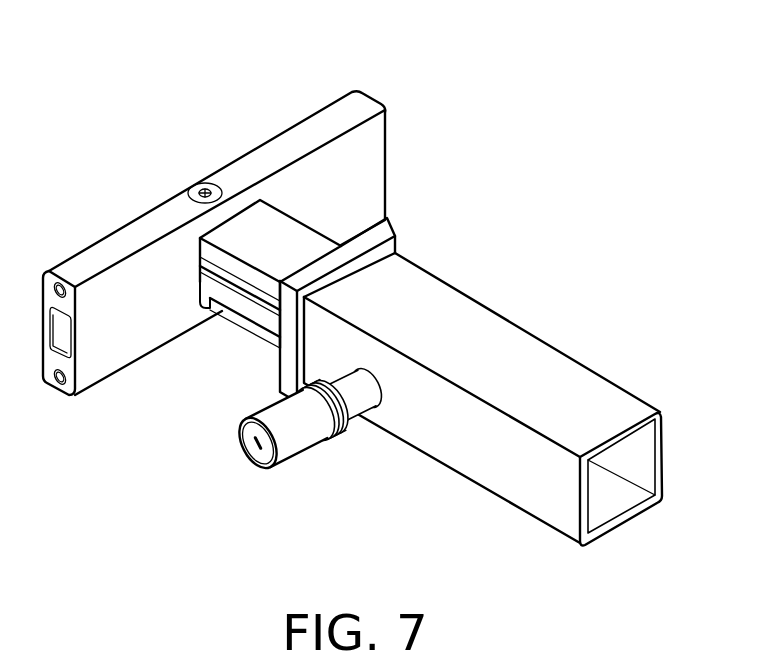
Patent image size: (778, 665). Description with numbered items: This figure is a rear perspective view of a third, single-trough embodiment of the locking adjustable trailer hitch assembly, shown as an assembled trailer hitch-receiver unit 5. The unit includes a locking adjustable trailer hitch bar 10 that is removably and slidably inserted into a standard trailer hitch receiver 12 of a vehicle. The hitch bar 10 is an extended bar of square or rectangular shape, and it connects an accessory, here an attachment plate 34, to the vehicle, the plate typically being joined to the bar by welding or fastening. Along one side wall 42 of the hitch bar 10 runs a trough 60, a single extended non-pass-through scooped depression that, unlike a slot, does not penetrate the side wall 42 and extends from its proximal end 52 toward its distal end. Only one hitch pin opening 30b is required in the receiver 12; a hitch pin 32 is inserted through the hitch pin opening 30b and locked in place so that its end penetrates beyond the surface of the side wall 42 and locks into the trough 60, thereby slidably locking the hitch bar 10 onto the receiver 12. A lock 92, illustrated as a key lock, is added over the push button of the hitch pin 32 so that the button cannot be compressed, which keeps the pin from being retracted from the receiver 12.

The trailer hitch-receiver unit 5 is at (288, 98).
The locking adjustable trailer hitch bar 10 is at (277, 228).
The trailer hitch receiver 12 is at (478, 333).
The hitch pin opening 30b is at (373, 390).
The hitch pin 32 is at (323, 441).
The attachment plate 34 is at (115, 248).
The side wall 42 is at (266, 338).
The proximal end 52 is at (207, 318).
The trough 60 is at (247, 308).
The lock 92 is at (258, 462).